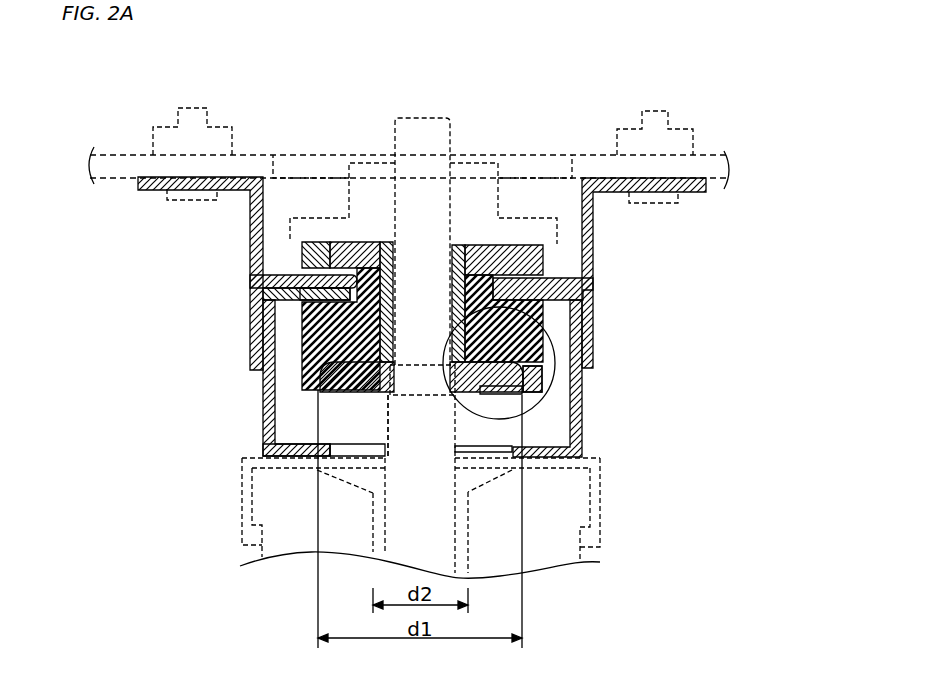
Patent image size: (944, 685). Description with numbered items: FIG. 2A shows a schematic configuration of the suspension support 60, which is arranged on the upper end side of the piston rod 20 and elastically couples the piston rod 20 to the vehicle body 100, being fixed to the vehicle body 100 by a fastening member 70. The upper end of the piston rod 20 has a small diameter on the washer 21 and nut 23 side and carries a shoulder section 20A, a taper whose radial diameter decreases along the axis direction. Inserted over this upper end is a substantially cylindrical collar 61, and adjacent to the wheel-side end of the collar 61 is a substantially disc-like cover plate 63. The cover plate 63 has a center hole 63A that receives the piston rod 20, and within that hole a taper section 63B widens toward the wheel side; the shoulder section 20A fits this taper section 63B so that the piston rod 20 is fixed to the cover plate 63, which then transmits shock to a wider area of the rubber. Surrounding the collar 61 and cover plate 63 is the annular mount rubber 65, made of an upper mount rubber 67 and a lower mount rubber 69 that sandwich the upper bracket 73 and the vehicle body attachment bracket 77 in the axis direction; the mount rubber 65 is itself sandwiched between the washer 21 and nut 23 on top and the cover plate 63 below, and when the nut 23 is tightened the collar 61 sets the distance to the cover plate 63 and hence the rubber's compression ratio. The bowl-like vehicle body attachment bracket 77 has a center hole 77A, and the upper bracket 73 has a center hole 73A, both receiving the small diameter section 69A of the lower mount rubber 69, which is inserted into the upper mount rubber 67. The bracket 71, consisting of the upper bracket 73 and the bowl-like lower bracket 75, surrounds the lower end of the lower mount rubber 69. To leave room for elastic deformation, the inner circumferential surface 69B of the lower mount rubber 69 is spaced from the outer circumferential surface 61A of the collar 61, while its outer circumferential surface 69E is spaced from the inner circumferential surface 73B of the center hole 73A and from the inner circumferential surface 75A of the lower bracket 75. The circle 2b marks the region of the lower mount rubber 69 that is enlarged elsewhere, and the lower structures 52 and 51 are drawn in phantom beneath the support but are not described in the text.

The vehicle body 100 is at (700, 154).
The fastening member 70 is at (168, 108).
The suspension support 60 is at (607, 114).
The piston rod 20 is at (425, 118).
The shoulder section 20A is at (388, 385).
The nut 23 is at (478, 163).
The washer 21 is at (527, 218).
The vehicle body attachment bracket 77 is at (242, 270).
The center hole 77A is at (368, 288).
The upper bracket 73 is at (242, 362).
The inner circumferential surface 73B is at (357, 276).
The center hole 73A is at (350, 316).
The lower bracket 75 is at (254, 408).
The inner circumferential surface 75A is at (276, 422).
The bracket 71 is at (142, 360).
The lower mount rubber 69 is at (549, 306).
The small diameter section 69A is at (322, 244).
The inner circumferential surface 69B is at (392, 258).
The outer circumferential surface 69E is at (545, 320).
The upper mount rubber 67 is at (547, 262).
The mount rubber 65 is at (688, 222).
The collar 61 is at (467, 333).
The outer circumferential surface 61A is at (388, 262).
The cover plate 63 is at (533, 378).
The taper section 63B is at (442, 400).
The center hole 63A is at (436, 409).
The circle 2b is at (551, 408).
The base housing 52 is at (603, 509).
The base plate 51 is at (583, 556).